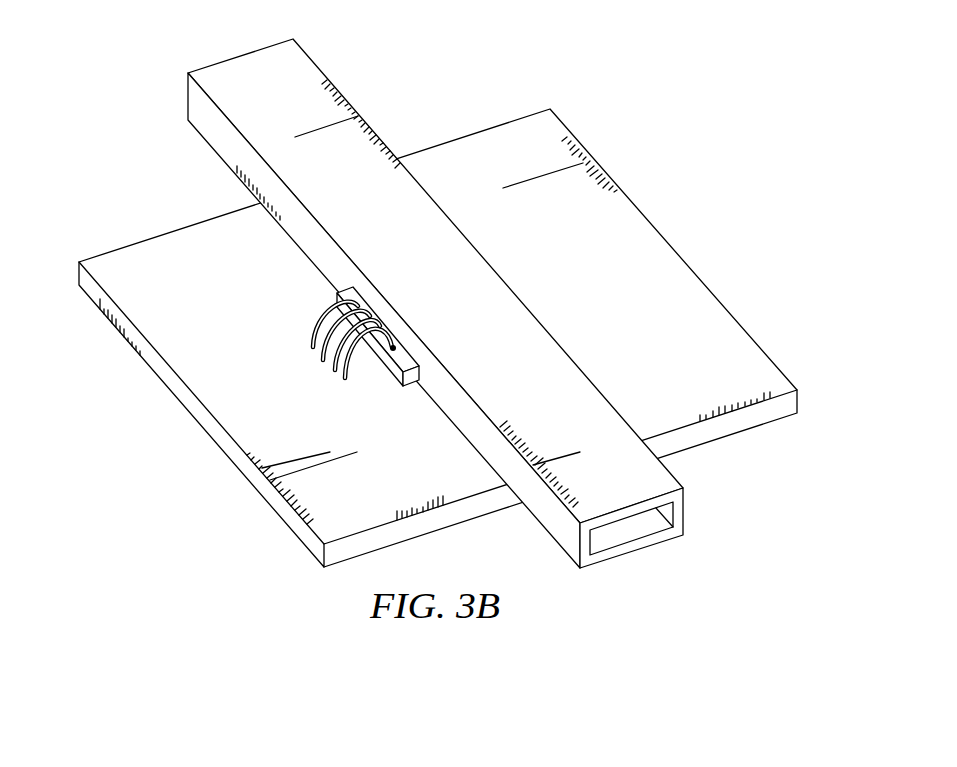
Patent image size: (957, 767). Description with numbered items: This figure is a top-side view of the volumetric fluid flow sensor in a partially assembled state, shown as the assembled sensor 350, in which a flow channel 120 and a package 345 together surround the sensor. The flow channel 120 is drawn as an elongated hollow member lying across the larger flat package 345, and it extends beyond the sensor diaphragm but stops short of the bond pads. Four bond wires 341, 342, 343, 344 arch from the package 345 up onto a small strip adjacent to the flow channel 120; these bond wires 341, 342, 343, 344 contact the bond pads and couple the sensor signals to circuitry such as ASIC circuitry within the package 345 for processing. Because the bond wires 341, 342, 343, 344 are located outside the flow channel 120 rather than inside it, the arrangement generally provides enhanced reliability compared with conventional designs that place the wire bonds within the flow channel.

The assembled volumetric fluid flow sensor 350 is at (422, 305).
The package 345 is at (685, 303).
The flow channel 120 is at (558, 528).
The bond wire 341 is at (345, 381).
The bond wire 342 is at (335, 371).
The bond wire 343 is at (322, 360).
The bond wire 344 is at (312, 344).